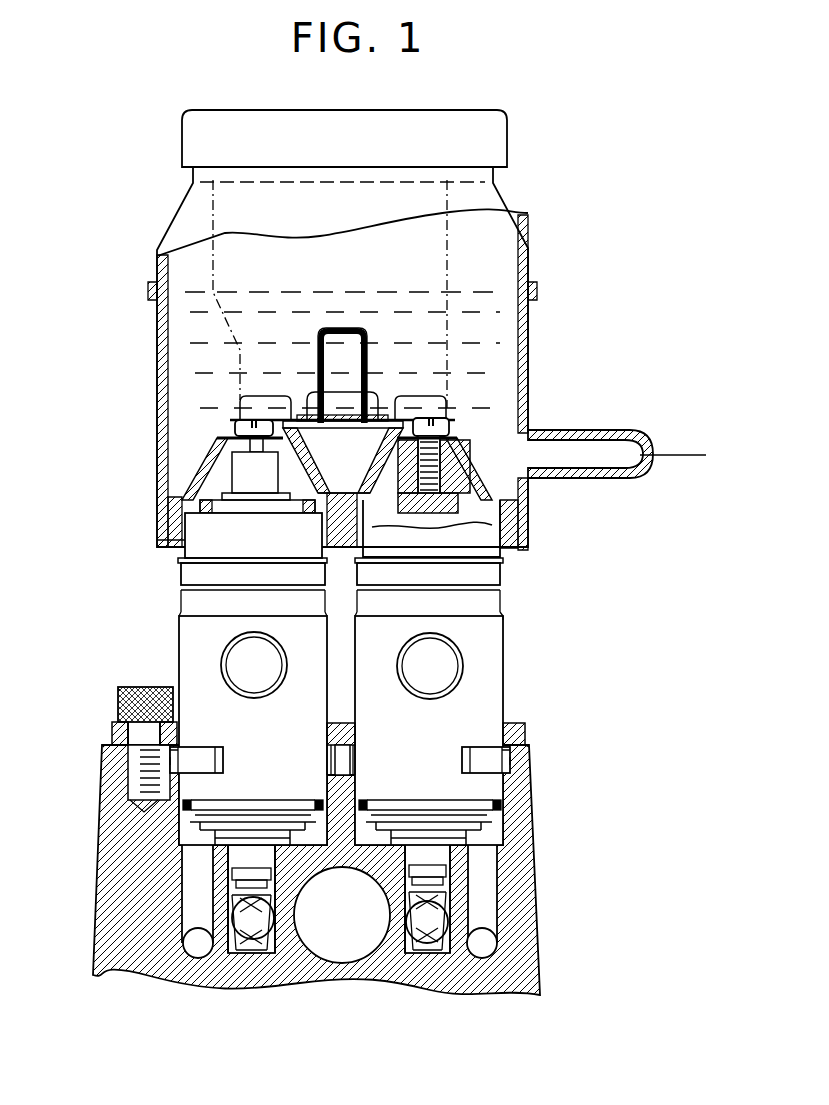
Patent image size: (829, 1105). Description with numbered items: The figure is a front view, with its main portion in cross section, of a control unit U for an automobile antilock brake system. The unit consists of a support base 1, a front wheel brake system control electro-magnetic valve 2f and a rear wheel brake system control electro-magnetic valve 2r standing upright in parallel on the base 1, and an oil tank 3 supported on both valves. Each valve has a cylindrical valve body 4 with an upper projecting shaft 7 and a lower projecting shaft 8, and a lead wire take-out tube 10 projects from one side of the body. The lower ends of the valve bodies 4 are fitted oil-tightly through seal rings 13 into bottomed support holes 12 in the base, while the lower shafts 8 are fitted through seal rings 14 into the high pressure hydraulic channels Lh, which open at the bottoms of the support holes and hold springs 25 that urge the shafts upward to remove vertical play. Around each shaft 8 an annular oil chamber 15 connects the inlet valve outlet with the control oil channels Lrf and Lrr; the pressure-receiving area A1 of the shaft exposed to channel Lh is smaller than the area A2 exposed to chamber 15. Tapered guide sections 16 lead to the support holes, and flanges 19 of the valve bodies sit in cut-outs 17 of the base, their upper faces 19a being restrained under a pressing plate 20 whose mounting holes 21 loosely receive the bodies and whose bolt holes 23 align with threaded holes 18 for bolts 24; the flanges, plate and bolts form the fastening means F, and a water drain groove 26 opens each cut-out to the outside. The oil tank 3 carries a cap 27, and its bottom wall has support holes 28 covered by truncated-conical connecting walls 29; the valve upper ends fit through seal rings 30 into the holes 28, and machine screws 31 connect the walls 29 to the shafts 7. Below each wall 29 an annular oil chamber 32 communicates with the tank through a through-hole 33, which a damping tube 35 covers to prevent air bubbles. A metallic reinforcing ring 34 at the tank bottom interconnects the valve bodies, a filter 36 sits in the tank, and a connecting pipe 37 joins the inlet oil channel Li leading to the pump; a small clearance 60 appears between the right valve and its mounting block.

The support base 1 is at (102, 943).
The rear wheel brake system control electro-magnetic valve 2r is at (179, 628).
The front wheel brake system control electro-magnetic valve 2f is at (503, 628).
The oil tank 3 is at (528, 360).
The valve body 4 is at (181, 660).
The upper projecting shaft 7 is at (259, 494).
The lower projecting shaft 8 is at (253, 840).
The lead wire take-out tube 10 is at (283, 670).
The support hole 12 is at (500, 832).
The seal ring 13 is at (195, 803).
The seal ring 14 is at (272, 863).
The annular oil chamber 15 is at (292, 835).
The tapered guide section 16 is at (515, 792).
The cut-out 17 is at (180, 750).
The threaded hole 18 is at (138, 775).
The flange 19 is at (205, 760).
The upper face of the flange 19a is at (186, 749).
The pressing plate 20 is at (112, 733).
The mounting hole 21 is at (330, 733).
The bolt hole 23 is at (128, 722).
The bolt 24 is at (130, 692).
The spring 25 is at (272, 955).
The water drain groove 26 is at (520, 772).
The cap 27 is at (504, 152).
The support hole 28 is at (220, 516).
The connecting wall 29 is at (230, 438).
The seal ring 30 is at (200, 480).
The machine screw 31 is at (252, 420).
The annular oil chamber 32 is at (300, 502).
The through-hole 33 is at (300, 445).
The reinforcing ring 34 is at (165, 532).
The damping tube 35 is at (345, 331).
The filter 36 is at (447, 278).
The connecting pipe 37 is at (584, 431).
The clearance 60 is at (405, 526).
The fastening means F is at (84, 668).
The control unit U is at (548, 598).
The inlet oil channel Li is at (686, 455).
The control oil channel Lrr is at (190, 900).
The control oil channel Lrf is at (490, 905).
The high pressure hydraulic channel Lh is at (230, 953).
The pressure-receiving area of the projecting shaft A1 is at (445, 857).
The pressure-receiving area of the electro-magnetic valve A2 is at (404, 857).